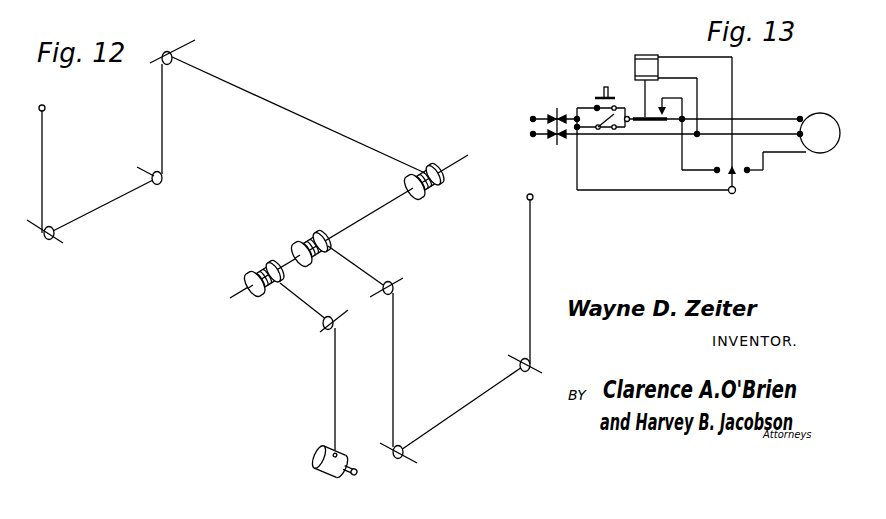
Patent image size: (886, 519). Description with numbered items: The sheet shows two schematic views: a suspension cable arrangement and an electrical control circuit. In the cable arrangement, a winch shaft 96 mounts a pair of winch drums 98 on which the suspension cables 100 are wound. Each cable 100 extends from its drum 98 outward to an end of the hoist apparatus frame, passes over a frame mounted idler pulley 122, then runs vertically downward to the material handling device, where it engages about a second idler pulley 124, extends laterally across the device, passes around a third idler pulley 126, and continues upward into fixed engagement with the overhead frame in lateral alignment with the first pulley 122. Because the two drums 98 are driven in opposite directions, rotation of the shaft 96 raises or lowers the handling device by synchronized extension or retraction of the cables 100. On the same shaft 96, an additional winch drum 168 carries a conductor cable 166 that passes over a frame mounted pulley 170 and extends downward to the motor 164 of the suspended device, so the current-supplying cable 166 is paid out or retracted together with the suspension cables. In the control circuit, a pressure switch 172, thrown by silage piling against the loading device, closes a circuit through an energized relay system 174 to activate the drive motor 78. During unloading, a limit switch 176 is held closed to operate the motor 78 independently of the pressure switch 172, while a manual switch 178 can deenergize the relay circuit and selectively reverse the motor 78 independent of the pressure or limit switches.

In FIG. 13, the drive motor 78 is at (823, 113).
In FIG. 12, the winch shaft 96 is at (348, 225).
In FIG. 12, the winch drum 98 is at (415, 198).
In FIG. 12, the suspension cable 100 is at (163, 130).
In FIG. 12, the idler pulley 122 is at (170, 55).
In FIG. 12, the second idler pulley 124 is at (163, 180).
In FIG. 12, the third idler pulley 126 is at (50, 239).
In FIG. 12, the motor 164 is at (315, 456).
In FIG. 12, the conductor cable 166 is at (335, 389).
In FIG. 12, the winch drum 168 is at (258, 291).
In FIG. 12, the frame mounted pulley 170 is at (320, 335).
In FIG. 13, the pressure switch 172 is at (600, 96).
In FIG. 13, the relay system 174 is at (632, 68).
In FIG. 13, the limit switch 176 is at (608, 132).
In FIG. 13, the manual switch 178 is at (737, 186).